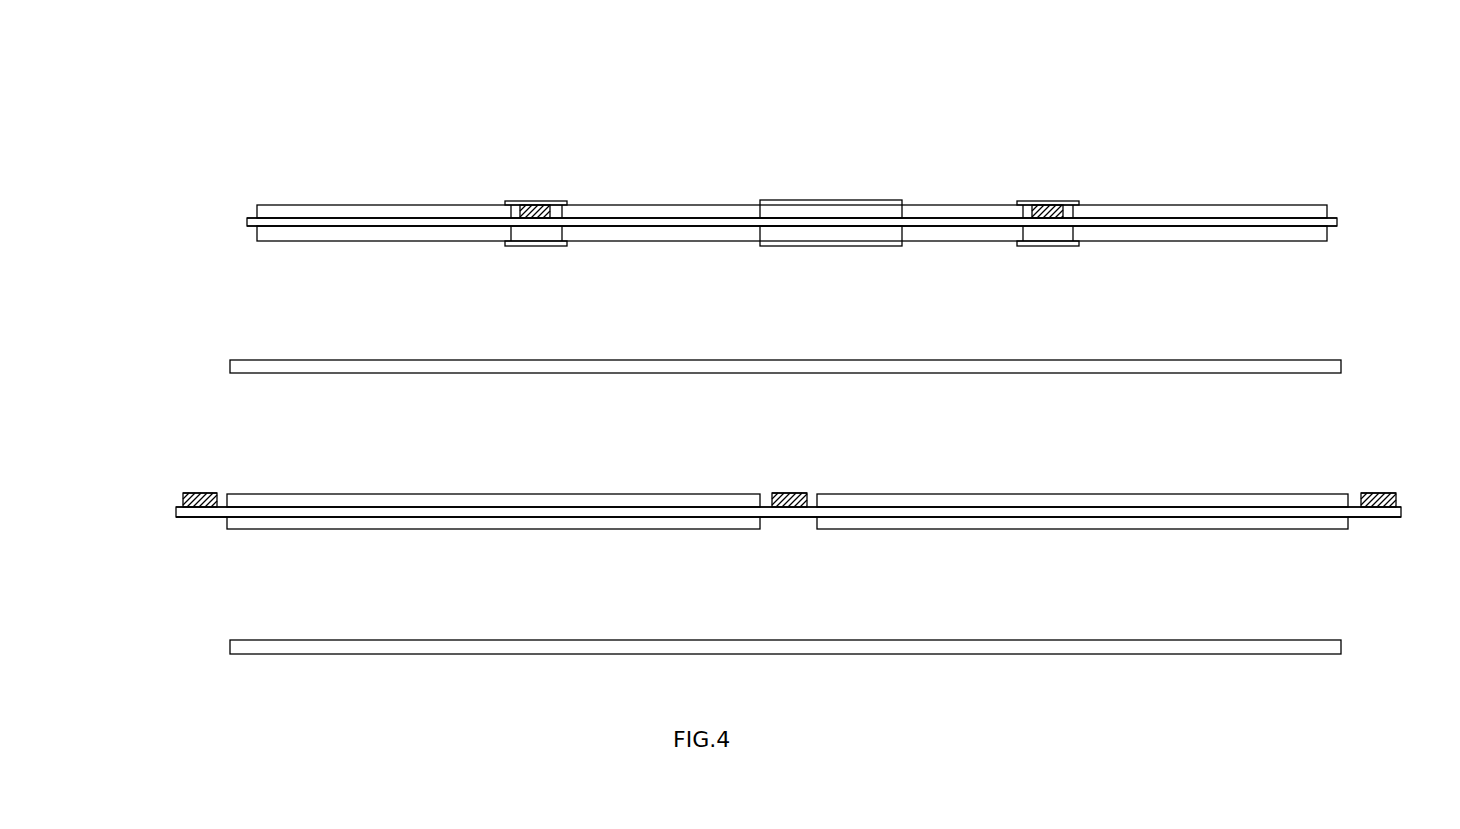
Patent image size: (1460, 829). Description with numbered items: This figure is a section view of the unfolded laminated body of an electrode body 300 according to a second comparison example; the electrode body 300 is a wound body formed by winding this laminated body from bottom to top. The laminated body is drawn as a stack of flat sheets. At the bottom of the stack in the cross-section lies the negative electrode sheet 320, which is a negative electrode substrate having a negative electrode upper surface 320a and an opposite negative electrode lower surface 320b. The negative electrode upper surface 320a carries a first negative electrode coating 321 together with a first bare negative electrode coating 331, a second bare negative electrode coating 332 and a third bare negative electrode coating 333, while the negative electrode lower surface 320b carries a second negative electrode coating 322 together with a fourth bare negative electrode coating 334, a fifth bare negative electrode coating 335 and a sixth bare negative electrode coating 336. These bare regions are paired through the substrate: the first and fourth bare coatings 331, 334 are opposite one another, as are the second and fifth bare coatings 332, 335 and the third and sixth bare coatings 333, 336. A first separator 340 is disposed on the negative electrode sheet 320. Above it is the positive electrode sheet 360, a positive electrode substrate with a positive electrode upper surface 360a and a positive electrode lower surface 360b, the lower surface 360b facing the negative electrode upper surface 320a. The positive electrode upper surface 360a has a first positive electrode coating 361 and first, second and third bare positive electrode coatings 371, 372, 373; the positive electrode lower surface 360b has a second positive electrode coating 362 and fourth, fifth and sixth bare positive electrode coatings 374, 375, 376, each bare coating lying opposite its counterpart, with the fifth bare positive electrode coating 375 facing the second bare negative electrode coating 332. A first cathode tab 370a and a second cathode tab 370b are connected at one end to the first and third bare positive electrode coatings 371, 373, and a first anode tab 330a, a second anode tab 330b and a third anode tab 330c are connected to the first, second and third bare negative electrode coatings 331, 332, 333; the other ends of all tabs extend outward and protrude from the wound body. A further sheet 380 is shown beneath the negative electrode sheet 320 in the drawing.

The electrode body 300 is at (227, 77).
The negative electrode sheet 320 is at (163, 512).
The negative electrode upper surface 320a is at (455, 494).
The negative electrode lower surface 320b is at (455, 529).
The first negative electrode coating 321 is at (517, 499).
The second negative electrode coating 322 is at (517, 523).
The first anode tab 330a is at (210, 493).
The second anode tab 330b is at (800, 493).
The third anode tab 330c is at (1380, 493).
The first bare negative electrode coating 331 is at (200, 474).
The second bare negative electrode coating 332 is at (790, 474).
The third bare negative electrode coating 333 is at (1370, 474).
The fourth bare negative electrode coating 334 is at (200, 528).
The fifth bare negative electrode coating 335 is at (790, 528).
The sixth bare negative electrode coating 336 is at (1378, 528).
The first separator 340 is at (212, 368).
The positive electrode sheet 360 is at (212, 222).
The positive electrode upper surface 360a is at (317, 205).
The positive electrode lower surface 360b is at (317, 241).
The first positive electrode coating 361 is at (378, 211).
The second positive electrode coating 362 is at (378, 232).
The first cathode tab 370a is at (548, 205).
The second cathode tab 370b is at (1063, 205).
The first bare positive electrode coating 371 is at (535, 188).
The second bare positive electrode coating 372 is at (831, 190).
The third bare positive electrode coating 373 is at (1048, 188).
The fourth bare positive electrode coating 374 is at (535, 250).
The fifth bare positive electrode coating 375 is at (831, 250).
The sixth bare positive electrode coating 376 is at (1048, 250).
The protective layer 380 is at (212, 647).